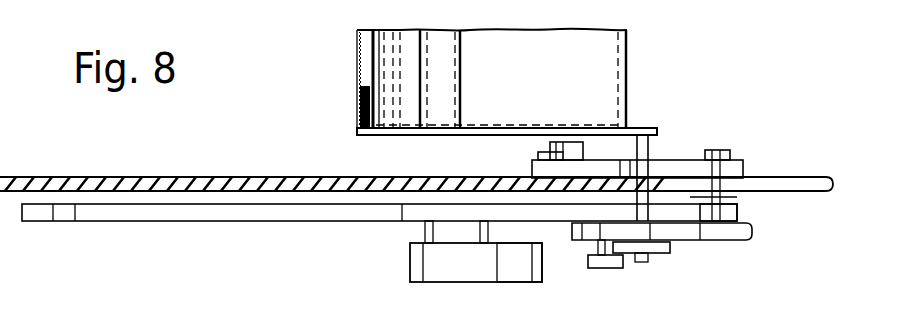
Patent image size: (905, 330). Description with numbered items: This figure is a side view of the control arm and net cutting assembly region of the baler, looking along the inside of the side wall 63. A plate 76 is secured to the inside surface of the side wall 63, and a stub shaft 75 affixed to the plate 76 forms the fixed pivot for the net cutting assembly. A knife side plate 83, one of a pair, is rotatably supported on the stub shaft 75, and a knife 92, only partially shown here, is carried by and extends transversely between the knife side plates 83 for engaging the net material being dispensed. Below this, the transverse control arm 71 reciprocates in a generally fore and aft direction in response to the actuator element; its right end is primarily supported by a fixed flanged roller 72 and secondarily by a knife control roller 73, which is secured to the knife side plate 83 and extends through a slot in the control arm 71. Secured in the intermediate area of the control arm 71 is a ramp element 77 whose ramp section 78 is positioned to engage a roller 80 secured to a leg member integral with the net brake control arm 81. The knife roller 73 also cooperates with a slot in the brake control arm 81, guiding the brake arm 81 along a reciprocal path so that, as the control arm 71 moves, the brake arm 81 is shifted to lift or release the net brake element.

The side wall 63 is at (113, 177).
The control arm 71 is at (195, 221).
The fixed flanged roller 72 is at (712, 196).
The knife control roller 73 is at (655, 256).
The stub shaft 75 is at (550, 143).
The plate 76 is at (680, 160).
The ramp element 77 is at (447, 262).
The ramp section 78 is at (515, 258).
The roller 80 is at (586, 268).
The net brake control arm 81 is at (733, 240).
The knife side plate 83 is at (633, 127).
The knife 92 is at (358, 50).